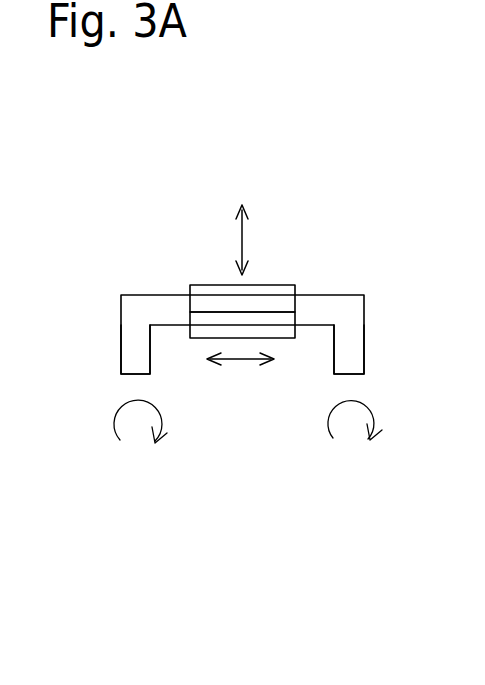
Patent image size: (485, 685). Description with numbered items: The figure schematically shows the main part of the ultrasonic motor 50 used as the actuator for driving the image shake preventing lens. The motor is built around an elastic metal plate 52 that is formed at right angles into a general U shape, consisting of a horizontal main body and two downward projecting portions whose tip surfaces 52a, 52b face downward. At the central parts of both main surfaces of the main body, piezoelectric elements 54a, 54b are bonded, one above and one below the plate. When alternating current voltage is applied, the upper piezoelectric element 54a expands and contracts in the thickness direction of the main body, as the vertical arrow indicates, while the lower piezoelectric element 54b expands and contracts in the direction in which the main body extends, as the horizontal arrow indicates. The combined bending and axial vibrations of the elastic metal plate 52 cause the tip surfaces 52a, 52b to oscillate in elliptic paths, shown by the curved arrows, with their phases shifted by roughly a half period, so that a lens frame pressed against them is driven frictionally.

The ultrasonic motor 50 is at (283, 210).
The elastic metal plate 52 is at (165, 293).
The tip surface 52a is at (134, 374).
The tip surface 52b is at (350, 374).
The piezoelectric element 54a is at (266, 282).
The piezoelectric element 54b is at (270, 333).